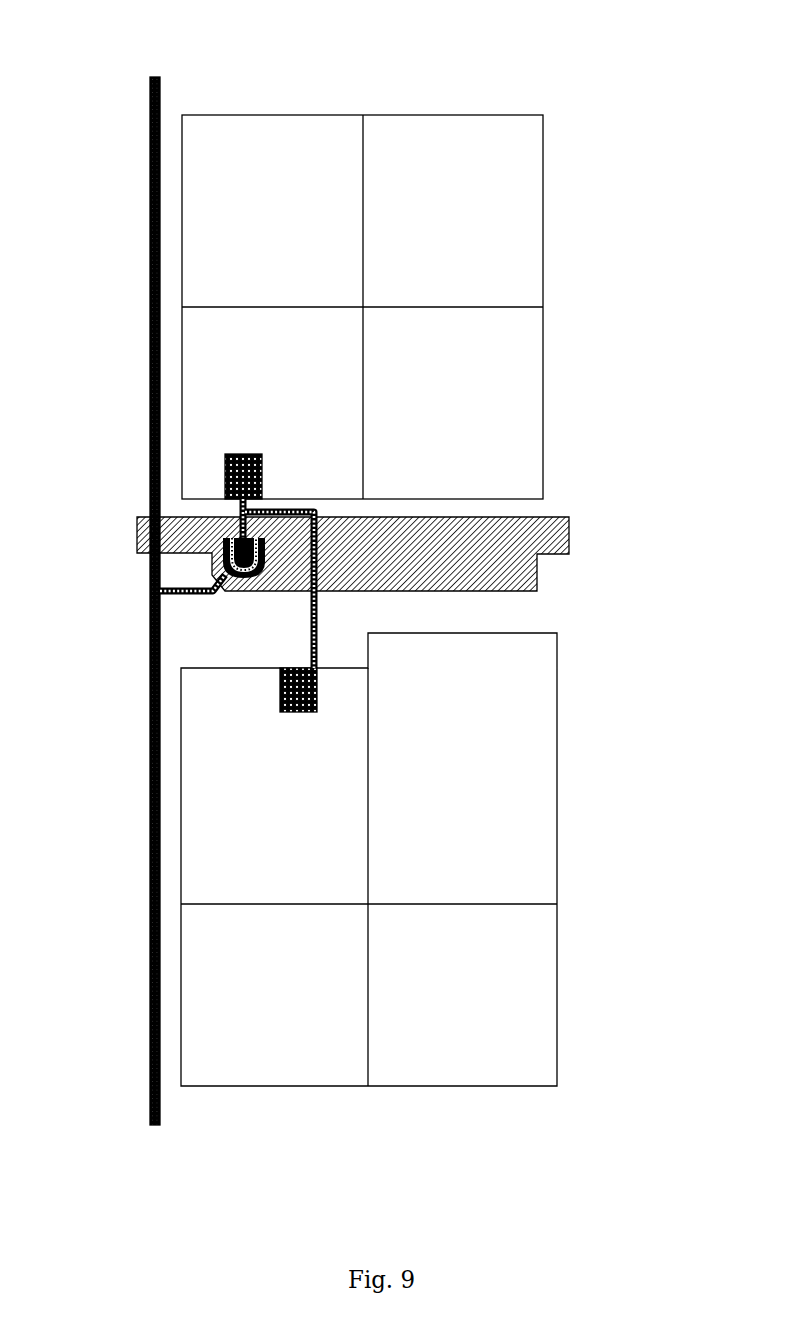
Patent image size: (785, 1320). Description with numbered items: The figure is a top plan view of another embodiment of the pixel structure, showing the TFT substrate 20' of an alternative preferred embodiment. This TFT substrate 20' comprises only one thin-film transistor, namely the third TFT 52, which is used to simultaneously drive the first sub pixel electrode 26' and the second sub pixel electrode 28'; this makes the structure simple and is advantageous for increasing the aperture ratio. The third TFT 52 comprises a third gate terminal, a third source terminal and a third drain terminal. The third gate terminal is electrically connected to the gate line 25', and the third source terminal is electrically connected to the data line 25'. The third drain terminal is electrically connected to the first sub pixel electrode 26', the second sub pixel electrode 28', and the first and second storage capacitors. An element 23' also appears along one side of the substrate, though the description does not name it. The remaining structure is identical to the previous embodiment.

The TFT substrate 20' is at (387, 568).
The wall panel 23' is at (98, 601).
The gate line 25' is at (301, 554).
The first sub pixel electrode 26' is at (445, 307).
The second sub pixel electrode 28' is at (435, 846).
The third TFT 52 is at (213, 527).